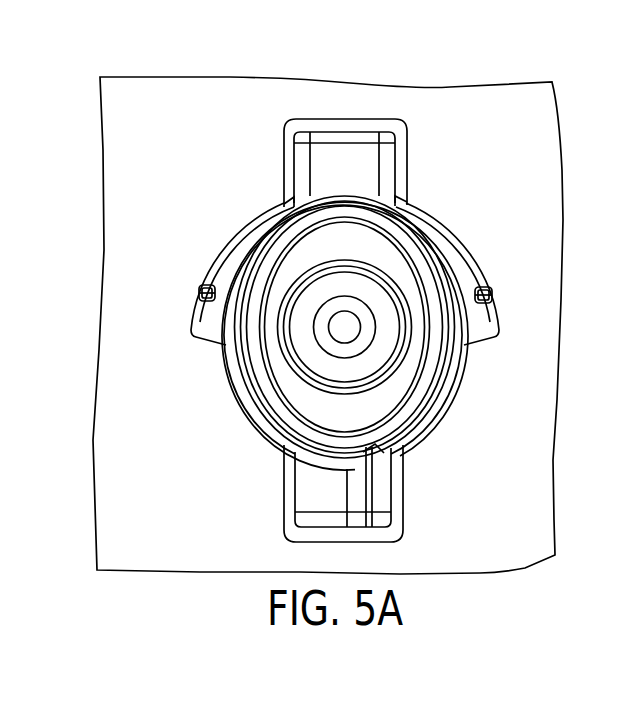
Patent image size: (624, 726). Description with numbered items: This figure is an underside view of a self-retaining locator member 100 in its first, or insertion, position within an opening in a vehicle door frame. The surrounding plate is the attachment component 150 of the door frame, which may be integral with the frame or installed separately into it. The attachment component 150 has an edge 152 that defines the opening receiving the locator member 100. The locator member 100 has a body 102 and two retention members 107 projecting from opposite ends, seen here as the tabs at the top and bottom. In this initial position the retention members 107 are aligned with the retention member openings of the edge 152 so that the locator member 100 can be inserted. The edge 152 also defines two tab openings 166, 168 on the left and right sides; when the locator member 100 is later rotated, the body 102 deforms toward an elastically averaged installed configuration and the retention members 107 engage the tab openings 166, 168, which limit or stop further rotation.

The self-retaining locator member 100 is at (190, 100).
The body 102 is at (258, 421).
The retention members 107 is at (362, 120).
The attachment component 150 is at (137, 204).
The edge 152 is at (436, 221).
The tab opening 166 is at (177, 333).
The tab opening 168 is at (499, 325).